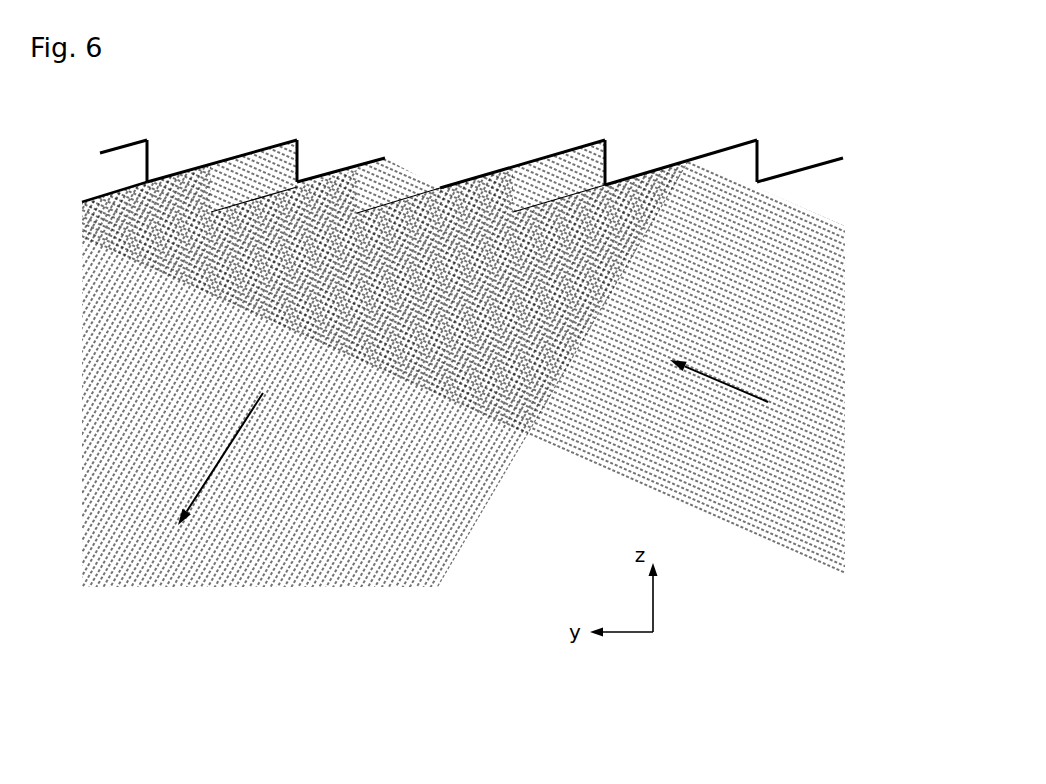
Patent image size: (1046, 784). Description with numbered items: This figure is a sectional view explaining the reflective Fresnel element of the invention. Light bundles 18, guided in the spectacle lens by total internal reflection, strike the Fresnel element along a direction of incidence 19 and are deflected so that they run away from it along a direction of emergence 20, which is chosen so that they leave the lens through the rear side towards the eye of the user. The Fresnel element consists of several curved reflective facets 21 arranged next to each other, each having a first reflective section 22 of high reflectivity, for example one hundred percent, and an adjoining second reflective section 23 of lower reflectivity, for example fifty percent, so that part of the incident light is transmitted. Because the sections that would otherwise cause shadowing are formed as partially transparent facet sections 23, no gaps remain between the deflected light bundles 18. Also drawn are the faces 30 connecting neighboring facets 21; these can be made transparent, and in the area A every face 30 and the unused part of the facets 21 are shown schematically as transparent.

The light bundles 18 is at (328, 565).
The direction of incidence 19 is at (715, 380).
The direction of emergence 20 is at (203, 488).
The reflective facet 21 is at (213, 163).
The first reflective section 22 is at (643, 173).
The second reflective section 23 is at (563, 196).
The face 30 is at (299, 155).
The area A is at (430, 151).